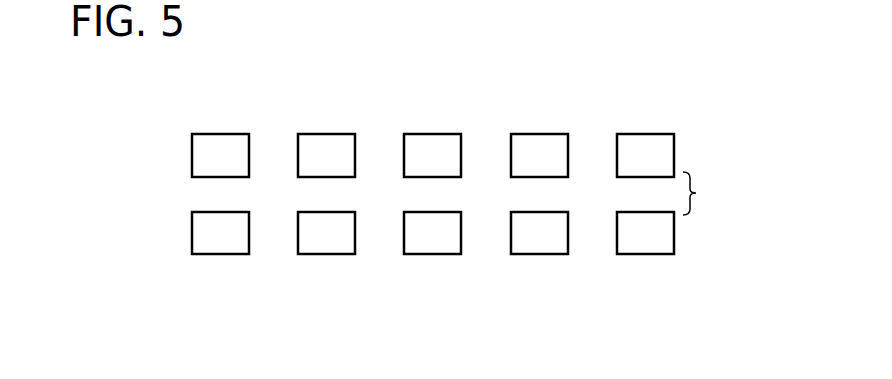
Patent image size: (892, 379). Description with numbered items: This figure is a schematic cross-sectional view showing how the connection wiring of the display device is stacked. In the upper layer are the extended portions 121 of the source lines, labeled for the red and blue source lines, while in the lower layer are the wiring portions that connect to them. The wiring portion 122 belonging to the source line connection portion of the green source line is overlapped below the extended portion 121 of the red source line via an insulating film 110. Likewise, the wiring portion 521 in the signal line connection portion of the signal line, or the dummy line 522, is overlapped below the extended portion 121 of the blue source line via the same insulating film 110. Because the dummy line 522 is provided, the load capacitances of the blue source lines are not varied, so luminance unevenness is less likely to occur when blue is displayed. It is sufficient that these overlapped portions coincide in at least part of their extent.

The insulating film 110 is at (712, 193).
The extended portion 121 is at (218, 141).
The wiring portion 122 is at (221, 246).
The wiring portion 521 is at (327, 246).
The dummy line 522 is at (540, 246).